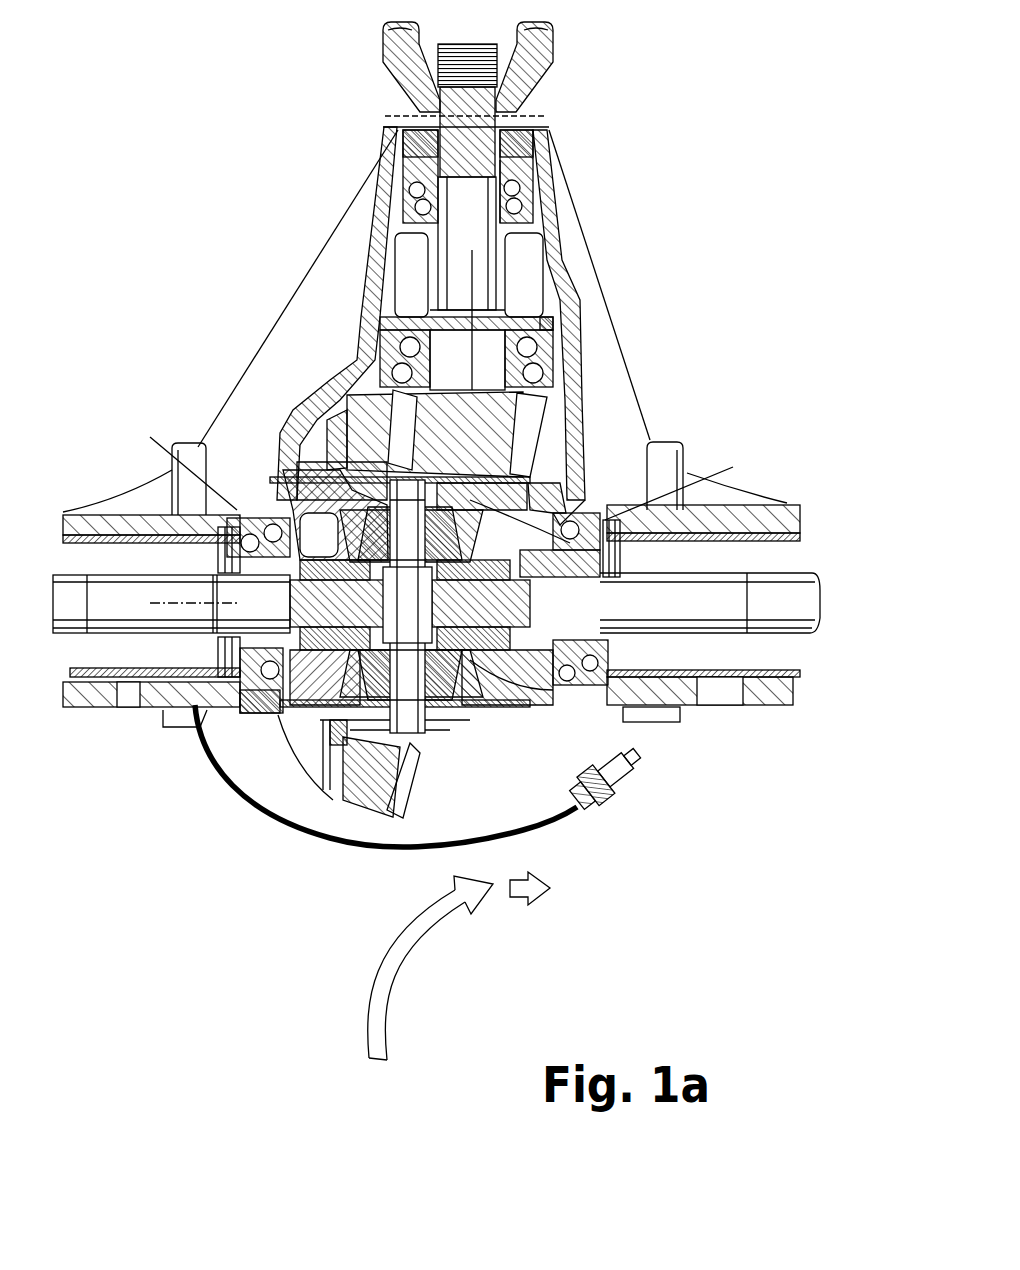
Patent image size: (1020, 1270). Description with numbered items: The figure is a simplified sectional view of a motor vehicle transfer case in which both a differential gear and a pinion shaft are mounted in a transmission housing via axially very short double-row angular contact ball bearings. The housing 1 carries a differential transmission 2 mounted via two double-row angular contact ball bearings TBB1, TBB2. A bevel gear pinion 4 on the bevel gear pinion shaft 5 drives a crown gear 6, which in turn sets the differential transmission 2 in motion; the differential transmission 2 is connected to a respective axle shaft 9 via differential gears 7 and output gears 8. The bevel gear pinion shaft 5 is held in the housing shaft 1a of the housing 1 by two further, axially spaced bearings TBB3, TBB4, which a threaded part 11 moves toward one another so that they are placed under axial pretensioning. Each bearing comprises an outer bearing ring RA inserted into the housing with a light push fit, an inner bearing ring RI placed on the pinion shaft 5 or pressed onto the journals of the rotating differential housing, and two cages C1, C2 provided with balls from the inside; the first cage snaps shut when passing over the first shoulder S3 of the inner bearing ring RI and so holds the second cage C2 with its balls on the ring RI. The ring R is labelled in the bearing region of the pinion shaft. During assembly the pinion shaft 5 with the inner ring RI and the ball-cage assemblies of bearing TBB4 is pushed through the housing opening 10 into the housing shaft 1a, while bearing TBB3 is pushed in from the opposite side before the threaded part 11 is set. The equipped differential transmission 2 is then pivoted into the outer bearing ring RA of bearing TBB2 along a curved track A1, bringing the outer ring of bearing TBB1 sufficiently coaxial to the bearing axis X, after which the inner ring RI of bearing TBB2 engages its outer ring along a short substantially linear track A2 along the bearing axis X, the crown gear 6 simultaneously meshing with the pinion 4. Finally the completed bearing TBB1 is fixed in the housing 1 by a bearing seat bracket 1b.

The threaded part 11 is at (522, 64).
The housing 1 is at (533, 167).
The housing shaft 1a is at (387, 243).
The bearing seat bracket 1b is at (277, 700).
The double-row angular contact ball bearing TBB1 is at (248, 680).
The double-row angular contact ball bearing TBB2 is at (623, 500).
The double-row angular contact ball bearing TBB3 is at (540, 200).
The double-row angular contact ball bearing TBB4 is at (563, 350).
The bearing ring R is at (532, 210).
The inner bearing ring RI is at (497, 360).
The bevel gear pinion shaft 5 is at (490, 283).
The first shoulder S3 is at (548, 320).
The outer bearing ring RA is at (637, 372).
The bevel gear pinion 4 is at (553, 453).
The differential gears 7 is at (380, 520).
The output gears 8 is at (493, 520).
The cage C1 is at (367, 352).
The cage C2 is at (360, 365).
The bearing axis X is at (167, 603).
The axle shaft 9 is at (436, 603).
The crown gear 6 is at (360, 807).
The differential transmission 2 is at (513, 707).
The housing opening 10 is at (665, 755).
The curved track A1 is at (392, 978).
The linear track A2 is at (538, 893).